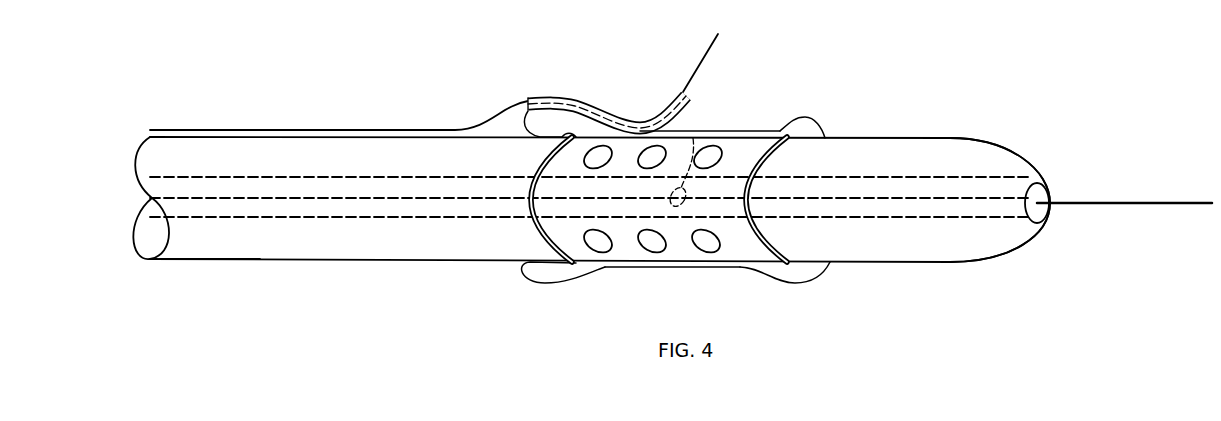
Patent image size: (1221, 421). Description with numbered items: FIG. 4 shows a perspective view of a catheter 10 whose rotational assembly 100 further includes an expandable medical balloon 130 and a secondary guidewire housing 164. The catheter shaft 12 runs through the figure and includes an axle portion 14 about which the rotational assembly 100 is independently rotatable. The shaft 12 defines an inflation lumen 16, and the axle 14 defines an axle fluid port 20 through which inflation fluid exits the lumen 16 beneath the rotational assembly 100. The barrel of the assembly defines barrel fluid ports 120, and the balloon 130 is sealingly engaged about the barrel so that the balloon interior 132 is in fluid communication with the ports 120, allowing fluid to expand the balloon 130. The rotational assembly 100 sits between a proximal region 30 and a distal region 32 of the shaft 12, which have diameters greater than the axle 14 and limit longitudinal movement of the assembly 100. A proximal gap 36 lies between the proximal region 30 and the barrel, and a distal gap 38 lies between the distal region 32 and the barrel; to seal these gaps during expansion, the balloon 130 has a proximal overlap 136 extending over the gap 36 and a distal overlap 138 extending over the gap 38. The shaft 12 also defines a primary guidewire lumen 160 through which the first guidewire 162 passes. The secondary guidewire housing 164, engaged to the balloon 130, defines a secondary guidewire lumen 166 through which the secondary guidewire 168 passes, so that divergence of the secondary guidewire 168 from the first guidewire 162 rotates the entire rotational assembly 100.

The catheter 10 is at (270, 59).
The catheter shaft 12 is at (591, 237).
The axle portion 14 is at (728, 222).
The inflation lumen 16 is at (383, 183).
The axle fluid port 20 is at (684, 156).
The proximal region 30 is at (273, 260).
The distal region 32 is at (1005, 150).
The proximal gap 36 is at (540, 243).
The distal gap 38 is at (770, 245).
The rotational assembly 100 is at (723, 79).
The barrel fluid ports 120 is at (665, 262).
The expandable medical balloon 130 is at (743, 130).
The balloon interior 132 is at (620, 267).
The proximal overlap 136 is at (548, 283).
The distal overlap 138 is at (817, 120).
The primary guidewire lumen 160 is at (947, 213).
The first guidewire 162 is at (1122, 200).
The secondary guidewire housing 164 is at (637, 107).
The secondary guidewire lumen 166 is at (530, 100).
The secondary guidewire 168 is at (435, 129).